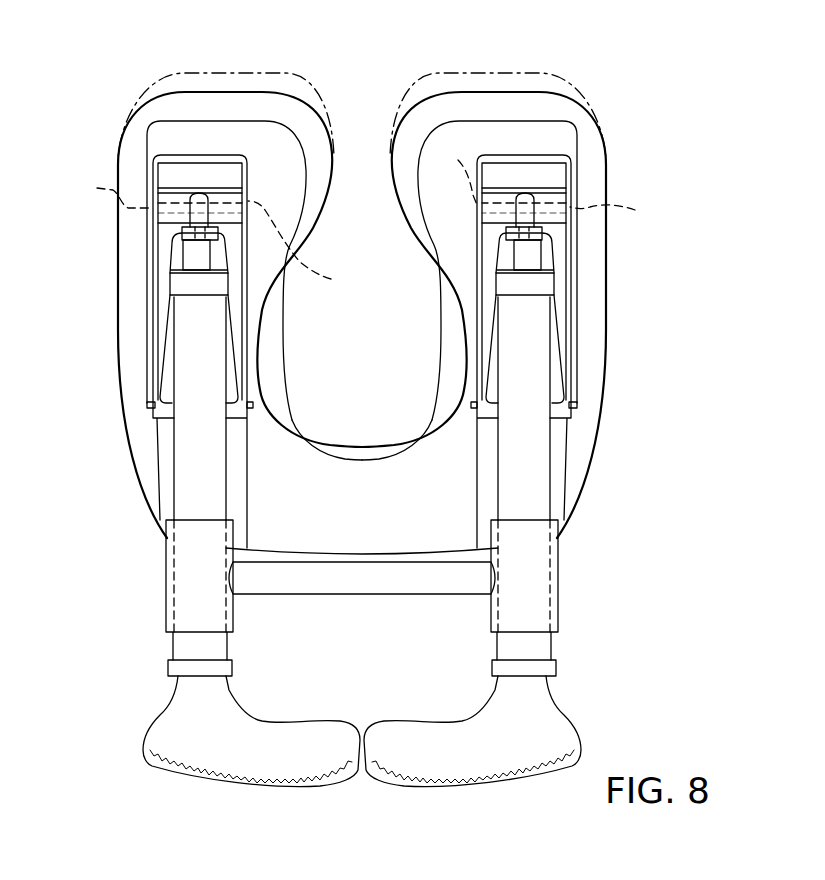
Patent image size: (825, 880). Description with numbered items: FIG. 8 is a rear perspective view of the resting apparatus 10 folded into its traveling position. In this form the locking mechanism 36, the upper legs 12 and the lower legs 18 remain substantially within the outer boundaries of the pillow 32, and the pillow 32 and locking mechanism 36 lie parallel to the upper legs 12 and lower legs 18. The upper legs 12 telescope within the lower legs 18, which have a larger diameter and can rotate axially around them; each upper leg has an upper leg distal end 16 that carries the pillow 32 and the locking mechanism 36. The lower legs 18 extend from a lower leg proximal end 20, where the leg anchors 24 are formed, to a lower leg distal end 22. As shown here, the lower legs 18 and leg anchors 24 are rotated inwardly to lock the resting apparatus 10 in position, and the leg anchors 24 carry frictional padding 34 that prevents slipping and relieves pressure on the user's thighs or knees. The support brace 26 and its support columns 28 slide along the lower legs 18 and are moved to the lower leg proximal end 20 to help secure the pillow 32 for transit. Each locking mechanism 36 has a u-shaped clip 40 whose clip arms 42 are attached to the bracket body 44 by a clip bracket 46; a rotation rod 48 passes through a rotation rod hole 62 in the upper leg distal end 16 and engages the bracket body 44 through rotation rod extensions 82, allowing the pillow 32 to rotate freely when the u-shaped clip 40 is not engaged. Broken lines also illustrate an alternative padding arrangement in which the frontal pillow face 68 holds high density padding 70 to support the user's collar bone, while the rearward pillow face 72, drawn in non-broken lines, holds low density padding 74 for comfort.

The resting apparatus 10 is at (425, 448).
The upper legs 12 is at (510, 257).
The upper leg distal end 16 is at (210, 257).
The lower legs 18 is at (185, 490).
The lower leg proximal end 20 is at (558, 665).
The lower leg distal end 22 is at (173, 283).
The leg anchors 24 is at (170, 718).
The support brace 26 is at (392, 590).
The support columns 28 is at (166, 595).
The pillow 32 is at (598, 452).
The frictional padding 34 is at (192, 778).
The locking mechanism 36 is at (227, 173).
The u-shaped clip 40 is at (167, 347).
The clip arms 42 is at (148, 407).
The bracket body 44 is at (247, 318).
The clip bracket 46 is at (185, 227).
The rotation rod 48 is at (248, 201).
The rotation rod hole 62 is at (200, 197).
The frontal pillow face 68 is at (530, 72).
The high density padding 70 is at (412, 98).
The rearward pillow face 72 is at (322, 442).
The low density padding 74 is at (400, 459).
The rotation rod extensions 82 is at (365, 221).